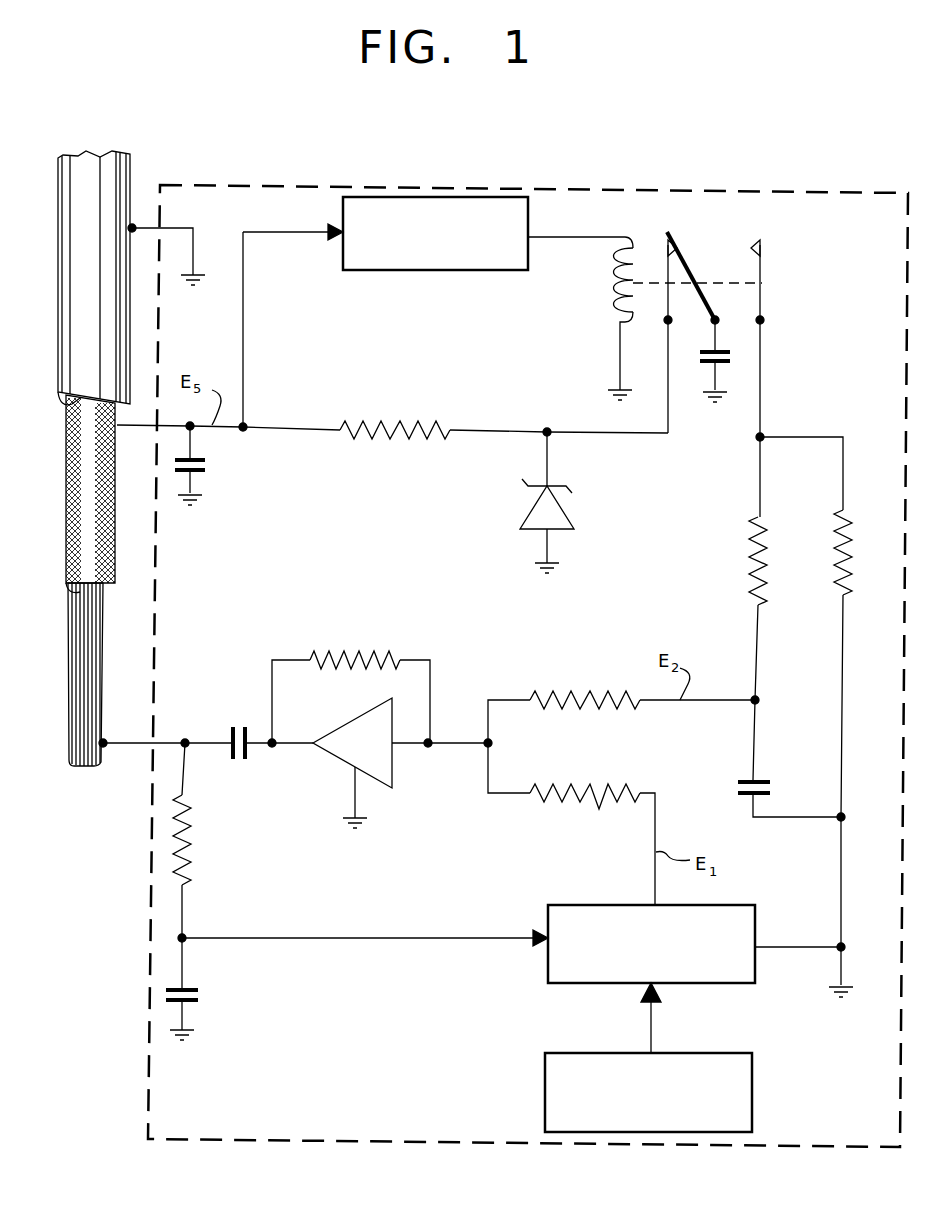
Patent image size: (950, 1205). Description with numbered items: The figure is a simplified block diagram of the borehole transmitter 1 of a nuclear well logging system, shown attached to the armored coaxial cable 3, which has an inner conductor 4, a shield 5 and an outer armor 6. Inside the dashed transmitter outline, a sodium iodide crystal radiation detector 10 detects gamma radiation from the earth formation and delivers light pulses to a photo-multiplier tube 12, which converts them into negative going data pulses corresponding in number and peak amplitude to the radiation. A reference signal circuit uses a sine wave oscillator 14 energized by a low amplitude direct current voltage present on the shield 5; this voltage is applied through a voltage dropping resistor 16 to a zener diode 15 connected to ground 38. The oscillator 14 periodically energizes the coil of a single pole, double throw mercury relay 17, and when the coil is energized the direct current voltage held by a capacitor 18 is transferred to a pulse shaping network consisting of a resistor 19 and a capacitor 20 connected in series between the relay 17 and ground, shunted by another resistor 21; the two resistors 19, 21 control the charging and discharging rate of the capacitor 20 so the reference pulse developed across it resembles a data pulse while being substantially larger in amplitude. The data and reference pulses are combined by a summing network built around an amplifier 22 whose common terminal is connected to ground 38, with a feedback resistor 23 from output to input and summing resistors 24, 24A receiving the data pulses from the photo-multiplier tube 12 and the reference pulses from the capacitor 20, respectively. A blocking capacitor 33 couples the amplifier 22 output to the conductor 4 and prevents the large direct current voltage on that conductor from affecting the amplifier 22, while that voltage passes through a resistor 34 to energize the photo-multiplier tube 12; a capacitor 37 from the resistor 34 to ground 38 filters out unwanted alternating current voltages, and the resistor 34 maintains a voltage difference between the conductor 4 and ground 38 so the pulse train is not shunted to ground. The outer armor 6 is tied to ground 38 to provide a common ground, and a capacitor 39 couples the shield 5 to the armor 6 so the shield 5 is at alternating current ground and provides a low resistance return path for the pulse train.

The logging transmitter 1 is at (642, 186).
The armored coaxial cable 3 is at (133, 452).
The inner conductor 4 is at (103, 660).
The shield 5 is at (60, 492).
The outer armor 6 is at (58, 209).
The radiation detector 10 is at (545, 1072).
The photo-multiplier tube 12 is at (566, 906).
The sine wave oscillator 14 is at (396, 270).
The zener diode 15 is at (572, 509).
The voltage dropping resistor 16 is at (416, 436).
The mercury relay 17 is at (707, 232).
The capacitor 18 is at (732, 364).
The resistor 19 is at (748, 572).
The capacitor 20 is at (760, 780).
The resistor 21 is at (850, 562).
The amplifier 22 is at (350, 725).
The feedback resistor 23 is at (340, 662).
The summing resistor 24 is at (604, 793).
The summing resistor 24A is at (545, 698).
The blocking capacitor 33 is at (236, 732).
The resistor 34 is at (178, 838).
The capacitor 37 is at (176, 988).
The ground 38 is at (186, 276).
The capacitor 39 is at (207, 460).